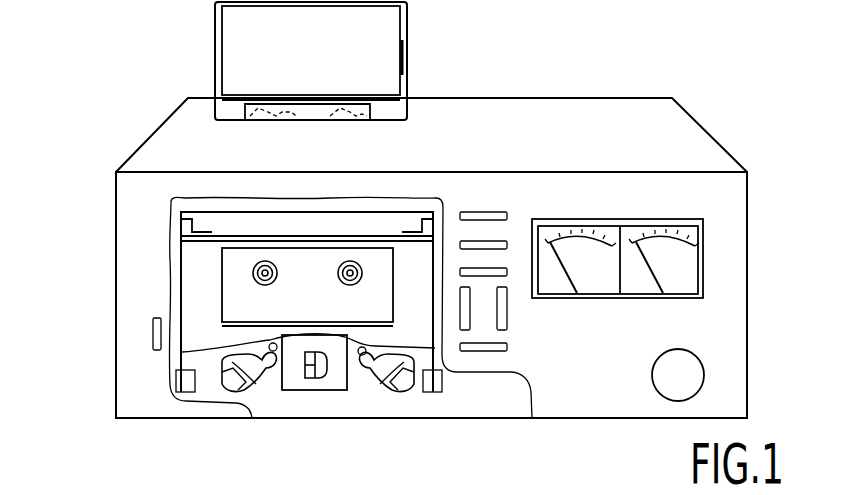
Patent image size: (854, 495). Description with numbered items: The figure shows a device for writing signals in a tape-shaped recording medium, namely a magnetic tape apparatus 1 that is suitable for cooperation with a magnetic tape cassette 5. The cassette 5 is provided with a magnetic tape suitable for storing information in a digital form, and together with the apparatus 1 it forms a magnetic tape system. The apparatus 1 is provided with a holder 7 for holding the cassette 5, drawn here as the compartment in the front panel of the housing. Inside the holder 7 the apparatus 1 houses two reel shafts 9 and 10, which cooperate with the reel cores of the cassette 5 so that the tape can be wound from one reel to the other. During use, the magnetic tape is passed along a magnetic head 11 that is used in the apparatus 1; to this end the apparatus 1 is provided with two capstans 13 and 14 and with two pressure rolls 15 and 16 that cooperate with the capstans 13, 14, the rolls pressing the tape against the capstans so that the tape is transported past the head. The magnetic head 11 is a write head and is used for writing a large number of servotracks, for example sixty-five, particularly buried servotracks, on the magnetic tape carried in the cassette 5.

The magnetic tape apparatus 1 is at (103, 368).
The magnetic tape cassette 5 is at (410, 32).
The holder 7 is at (198, 261).
The reel shaft 9 is at (253, 275).
The reel shaft 10 is at (348, 281).
The magnetic head 11 is at (308, 383).
The capstan 13 is at (269, 345).
The capstan 14 is at (366, 347).
The pressure roll 15 is at (273, 372).
The pressure roll 16 is at (363, 365).